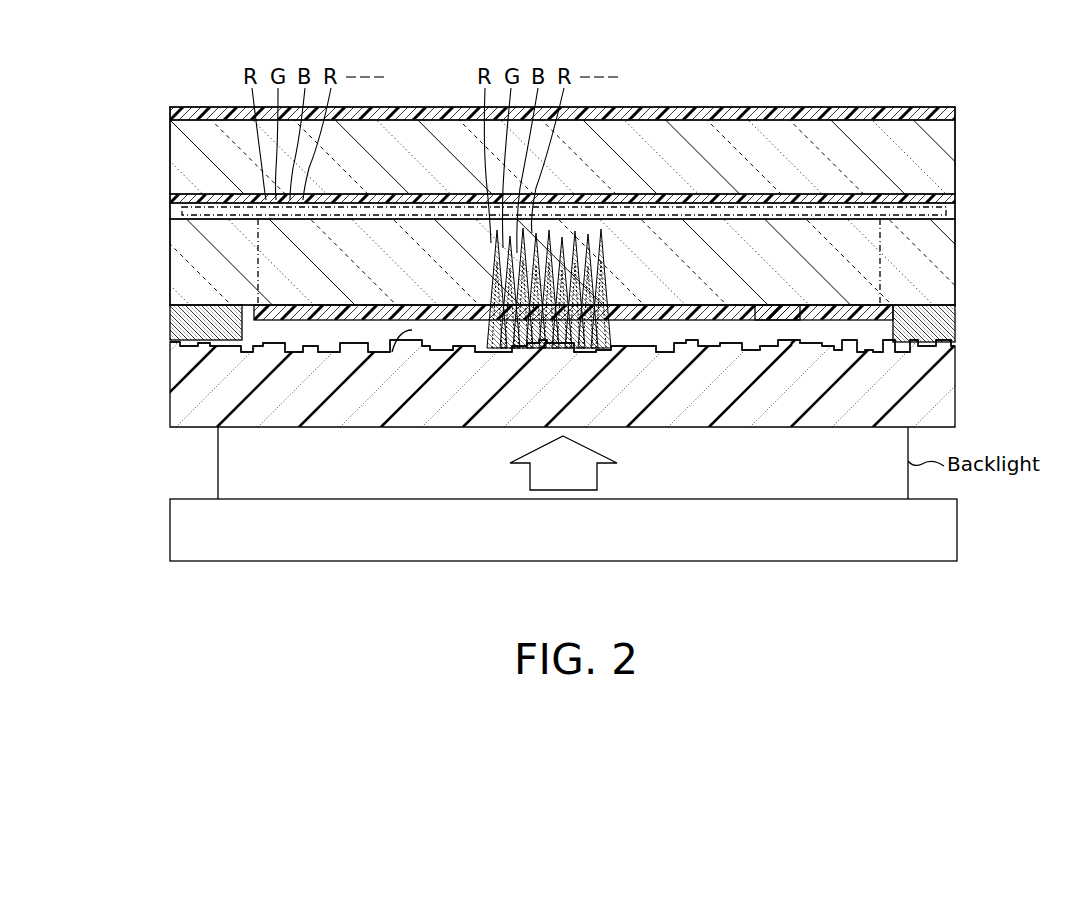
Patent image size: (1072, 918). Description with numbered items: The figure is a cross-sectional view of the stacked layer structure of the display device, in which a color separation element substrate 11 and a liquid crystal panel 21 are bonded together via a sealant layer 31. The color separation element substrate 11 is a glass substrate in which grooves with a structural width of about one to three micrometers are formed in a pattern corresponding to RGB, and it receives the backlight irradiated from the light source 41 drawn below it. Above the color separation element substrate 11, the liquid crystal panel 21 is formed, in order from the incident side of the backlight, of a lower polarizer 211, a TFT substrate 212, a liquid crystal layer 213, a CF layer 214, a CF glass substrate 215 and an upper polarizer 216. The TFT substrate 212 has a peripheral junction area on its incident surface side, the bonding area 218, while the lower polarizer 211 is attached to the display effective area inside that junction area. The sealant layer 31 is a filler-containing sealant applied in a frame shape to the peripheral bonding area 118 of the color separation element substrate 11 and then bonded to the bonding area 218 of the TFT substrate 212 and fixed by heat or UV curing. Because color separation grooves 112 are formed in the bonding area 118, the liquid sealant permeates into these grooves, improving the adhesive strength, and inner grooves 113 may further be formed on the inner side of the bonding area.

The liquid crystal panel 21 is at (975, 108).
The upper polarizer 216 is at (170, 113).
The CF glass substrate 215 is at (179, 150).
The CF layer 214 is at (173, 199).
The liquid crystal layer 213 is at (181, 212).
The TFT substrate 212 is at (179, 264).
The bonding area 218 is at (915, 310).
The lower polarizer 211 is at (776, 314).
The sealant layer 31 is at (177, 324).
The bonding area 118 is at (933, 342).
The color separation grooves 112 is at (197, 346).
The inner grooves 113 is at (401, 346).
The color separation element substrate 11 is at (975, 342).
The light source 41 is at (950, 532).